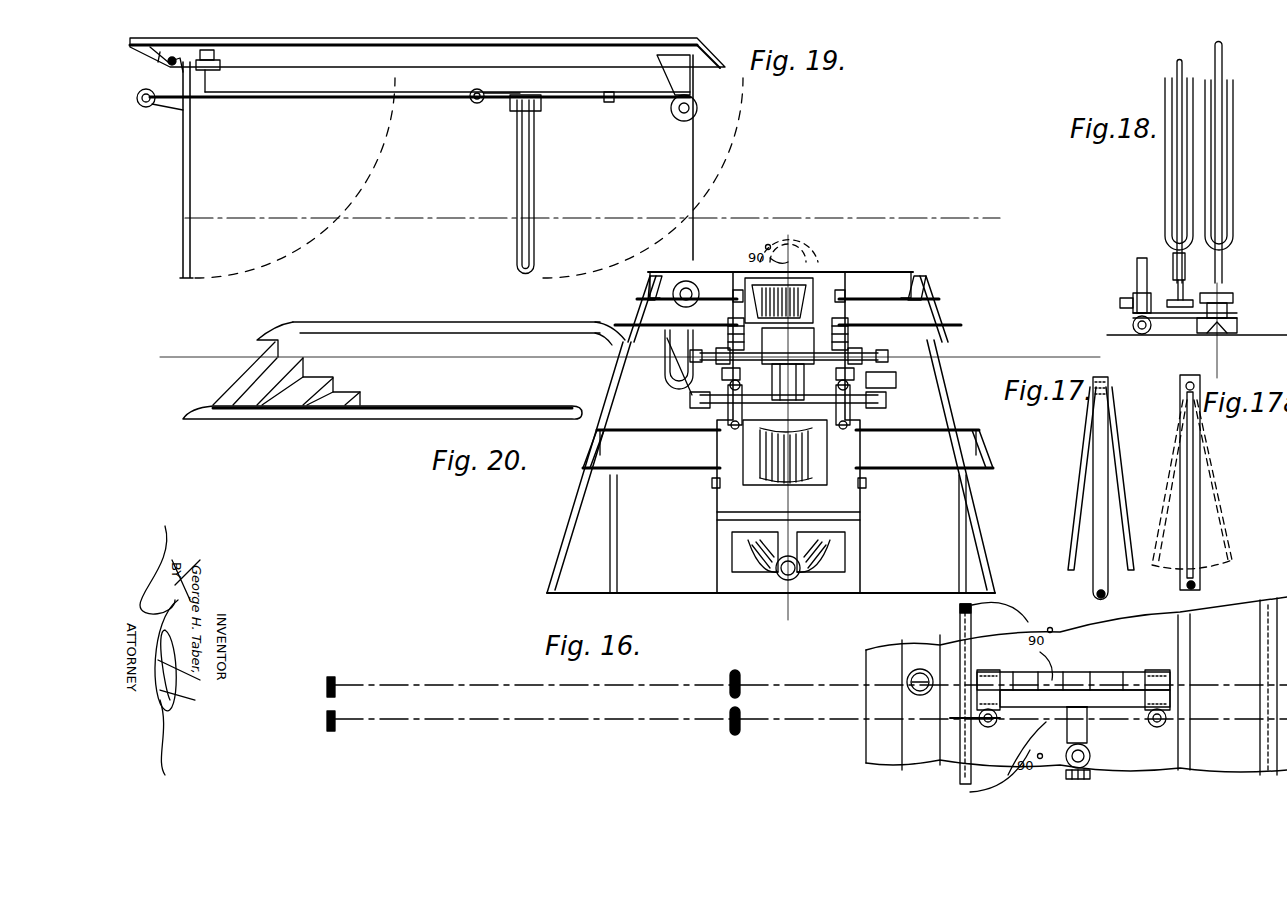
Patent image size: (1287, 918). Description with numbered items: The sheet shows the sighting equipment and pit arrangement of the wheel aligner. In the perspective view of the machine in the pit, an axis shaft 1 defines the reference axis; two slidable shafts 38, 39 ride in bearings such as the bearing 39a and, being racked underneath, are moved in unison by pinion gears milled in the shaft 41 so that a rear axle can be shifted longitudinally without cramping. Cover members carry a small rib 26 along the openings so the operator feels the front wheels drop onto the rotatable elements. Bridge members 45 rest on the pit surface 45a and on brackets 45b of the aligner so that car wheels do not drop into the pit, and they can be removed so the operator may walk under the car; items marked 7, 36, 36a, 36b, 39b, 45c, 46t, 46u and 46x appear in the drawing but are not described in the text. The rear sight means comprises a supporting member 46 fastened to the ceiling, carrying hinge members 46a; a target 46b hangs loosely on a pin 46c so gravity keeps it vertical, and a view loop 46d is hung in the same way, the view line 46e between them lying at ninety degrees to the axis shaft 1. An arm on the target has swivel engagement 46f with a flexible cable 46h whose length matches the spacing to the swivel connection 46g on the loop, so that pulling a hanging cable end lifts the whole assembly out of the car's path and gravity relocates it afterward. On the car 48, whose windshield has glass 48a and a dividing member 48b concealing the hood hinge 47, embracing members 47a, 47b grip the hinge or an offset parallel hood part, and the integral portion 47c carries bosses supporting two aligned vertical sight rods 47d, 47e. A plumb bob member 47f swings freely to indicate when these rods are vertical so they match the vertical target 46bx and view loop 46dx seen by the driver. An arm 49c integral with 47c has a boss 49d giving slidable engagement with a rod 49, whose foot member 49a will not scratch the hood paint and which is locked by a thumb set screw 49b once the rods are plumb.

In FIG. 20, the axis shaft 1 is at (783, 580).
In FIG. 20, the guide bracket 7 is at (848, 555).
In FIG. 20, the rib 26 is at (750, 278).
In FIG. 20, the shaft 36 is at (905, 342).
In FIG. 20, the roller 36a is at (832, 358).
In FIG. 20, the roller 36b is at (730, 340).
In FIG. 20, the slidable shaft 38 is at (730, 410).
In FIG. 20, the slidable shaft 39 is at (855, 413).
In FIG. 20, the bearing 39a is at (725, 396).
In FIG. 20, the link 39b is at (847, 388).
In FIG. 20, the pinion gear shaft 41 is at (880, 387).
In FIG. 20, the bridge member 45 is at (650, 312).
In FIG. 20, the pit surface 45a is at (645, 285).
In FIG. 20, the bracket 45b is at (740, 286).
In FIG. 20, the rail 45c is at (663, 335).
In FIG. 19, the supporting member 46 is at (365, 60).
In FIG. 19, the hinge member 46a is at (215, 58).
In FIG. 19, the target 46b is at (193, 135).
In FIG. 18, the target 46b is at (1222, 56).
In FIG. 16, the target 46b is at (338, 685).
In FIG. 18, the target 46bx is at (1178, 62).
In FIG. 16, the target 46bx is at (333, 732).
In FIG. 19, the pin 46c is at (162, 63).
In FIG. 19, the view loop 46d is at (520, 162).
In FIG. 18, the view loop 46d is at (1233, 108).
In FIG. 16, the view loop 46d is at (735, 680).
In FIG. 18, the view loop 46dx is at (1165, 84).
In FIG. 16, the view loop 46dx is at (735, 726).
In FIG. 19, the view line 46e is at (620, 215).
In FIG. 19, the swivel engagement 46f is at (147, 107).
In FIG. 19, the swivel connection 46g is at (476, 104).
In FIG. 19, the flexible cable 46h is at (330, 95).
In FIG. 19, the fitting 46t is at (615, 97).
In FIG. 19, the roller bracket 46u is at (680, 92).
In FIG. 19, the rod 46x is at (697, 217).
In FIG. 20, the hood hinge 47 is at (692, 396).
In FIG. 18, the hood hinge 47 is at (1210, 325).
In FIG. 16, the hood hinge 47 is at (1072, 680).
In FIG. 16, the embracing member 47a is at (988, 670).
In FIG. 16, the embracing member 47b is at (1155, 668).
In FIG. 16, the portion 47c is at (1120, 725).
In FIG. 18, the vertical sight rod 47d is at (1176, 258).
In FIG. 16, the vertical sight rod 47d is at (1168, 720).
In FIG. 17, the vertical sight rod 47e is at (1102, 405).
In FIG. 17A, the vertical sight rod 47e is at (1200, 390).
In FIG. 16, the vertical sight rod 47e is at (984, 727).
In FIG. 17, the plumb bob member 47f is at (1118, 440).
In FIG. 17A, the plumb bob member 47f is at (1188, 480).
In FIG. 16, the plumb bob member 47f is at (975, 718).
In FIG. 16, the car 48 is at (960, 775).
In FIG. 16, the windshield glass 48a is at (1262, 640).
In FIG. 16, the dividing member 48b is at (1262, 678).
In FIG. 18, the rod 49 is at (1138, 262).
In FIG. 16, the rod 49 is at (1068, 770).
In FIG. 18, the foot member 49a is at (1132, 325).
In FIG. 16, the foot member 49a is at (1092, 762).
In FIG. 18, the thumb set screw 49b is at (1120, 303).
In FIG. 16, the thumb set screw 49b is at (1078, 782).
In FIG. 18, the arm 49c is at (1170, 300).
In FIG. 18, the boss 49d is at (1133, 296).
In FIG. 16, the boss 49d is at (1092, 750).